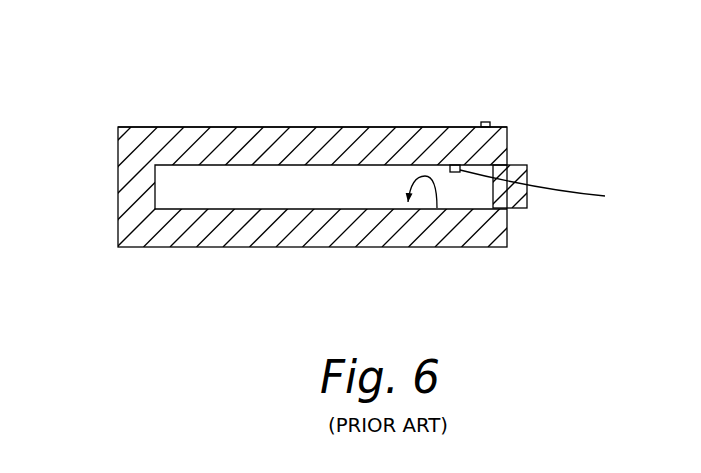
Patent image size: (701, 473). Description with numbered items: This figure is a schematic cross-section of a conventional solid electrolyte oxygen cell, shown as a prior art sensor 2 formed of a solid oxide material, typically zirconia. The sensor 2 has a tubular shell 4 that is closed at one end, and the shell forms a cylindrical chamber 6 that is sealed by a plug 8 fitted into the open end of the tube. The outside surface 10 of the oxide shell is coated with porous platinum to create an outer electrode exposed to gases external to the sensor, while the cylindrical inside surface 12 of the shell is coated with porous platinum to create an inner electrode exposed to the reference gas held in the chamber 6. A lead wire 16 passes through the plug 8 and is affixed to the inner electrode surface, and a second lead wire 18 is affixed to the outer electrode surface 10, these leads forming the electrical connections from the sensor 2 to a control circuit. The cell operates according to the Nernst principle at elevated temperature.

The sensor 2 is at (130, 124).
The tubular shell 4 is at (209, 130).
The cylindrical chamber 6 is at (382, 181).
The plug 8 is at (532, 167).
The outside surface 10 is at (310, 122).
The inside surface 12 is at (437, 208).
The lead wire 16 is at (567, 197).
The second lead wire 18 is at (487, 123).